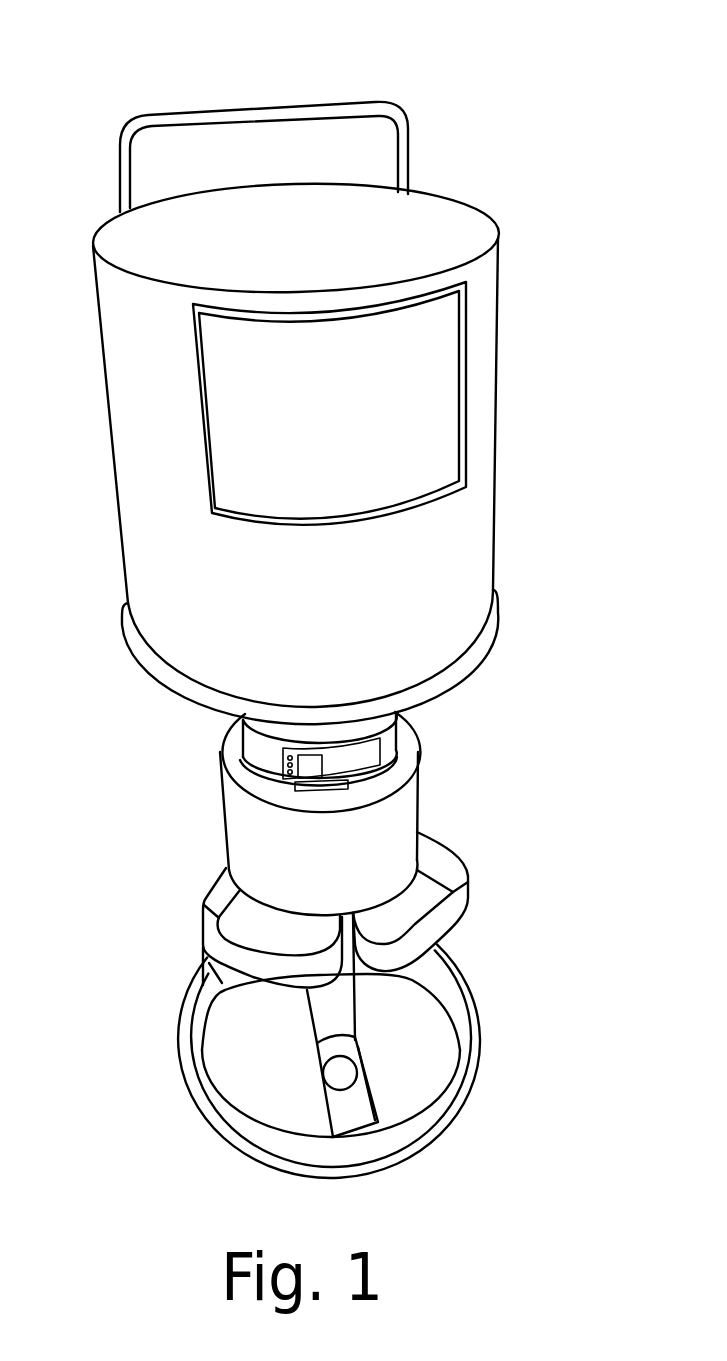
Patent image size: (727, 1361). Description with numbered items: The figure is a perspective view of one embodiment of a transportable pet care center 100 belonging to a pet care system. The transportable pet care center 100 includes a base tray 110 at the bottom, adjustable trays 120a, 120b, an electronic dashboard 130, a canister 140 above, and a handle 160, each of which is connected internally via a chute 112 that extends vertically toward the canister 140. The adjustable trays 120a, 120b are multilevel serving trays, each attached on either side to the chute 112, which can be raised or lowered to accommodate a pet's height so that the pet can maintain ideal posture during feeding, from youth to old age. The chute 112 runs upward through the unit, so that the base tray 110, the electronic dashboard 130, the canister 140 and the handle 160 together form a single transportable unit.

The transportable pet care center 100 is at (166, 34).
The base tray 110 is at (480, 1040).
The chute 112 is at (330, 1028).
The adjustable tray 120a is at (472, 892).
The adjustable tray 120b is at (202, 933).
The electronic dashboard 130 is at (388, 739).
The canister 140 is at (483, 522).
The handle 160 is at (408, 130).